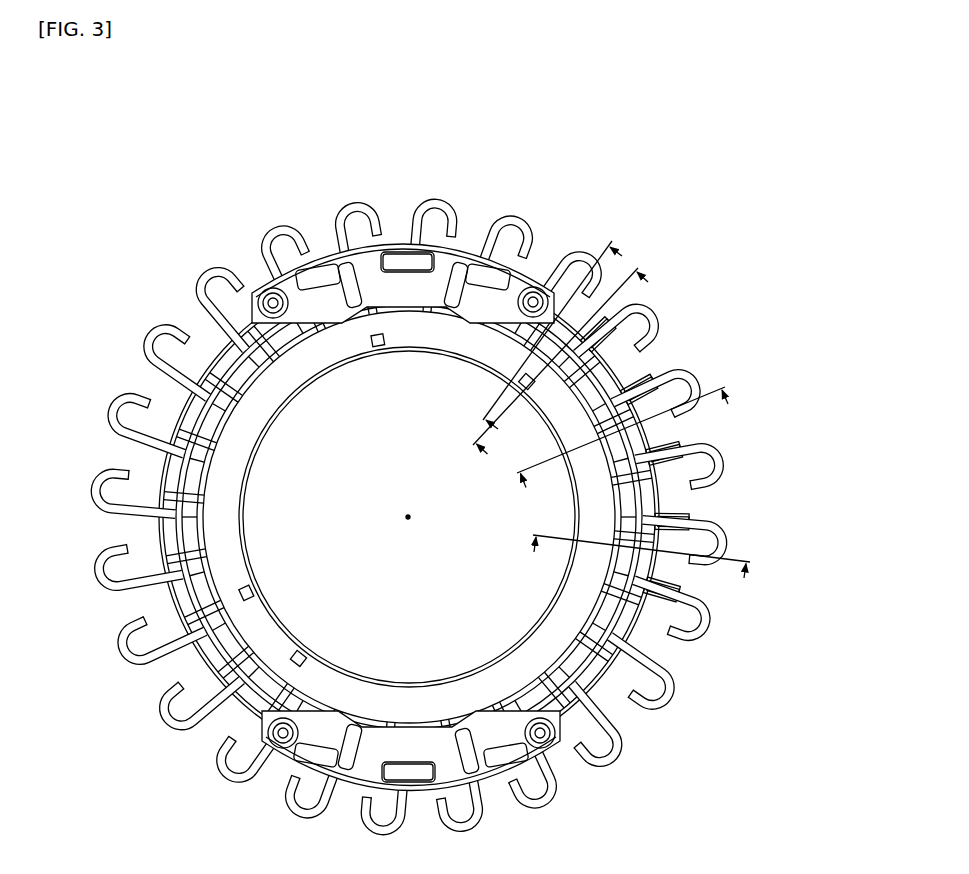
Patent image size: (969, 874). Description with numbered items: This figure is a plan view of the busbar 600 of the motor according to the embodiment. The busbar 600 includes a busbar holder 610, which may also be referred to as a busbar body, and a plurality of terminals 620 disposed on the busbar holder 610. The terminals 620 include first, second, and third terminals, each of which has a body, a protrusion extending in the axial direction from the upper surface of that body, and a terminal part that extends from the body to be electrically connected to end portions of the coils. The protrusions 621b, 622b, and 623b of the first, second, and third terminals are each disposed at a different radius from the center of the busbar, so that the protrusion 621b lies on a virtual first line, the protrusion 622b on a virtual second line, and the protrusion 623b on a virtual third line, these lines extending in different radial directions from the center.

The busbar 600 is at (150, 167).
The busbar holder 610 is at (158, 602).
The terminals 620 is at (445, 193).
The protrusion of the first terminal 621b is at (377, 350).
The protrusion of the second terminal 622b is at (462, 349).
The protrusion of the third terminal 623b is at (613, 340).